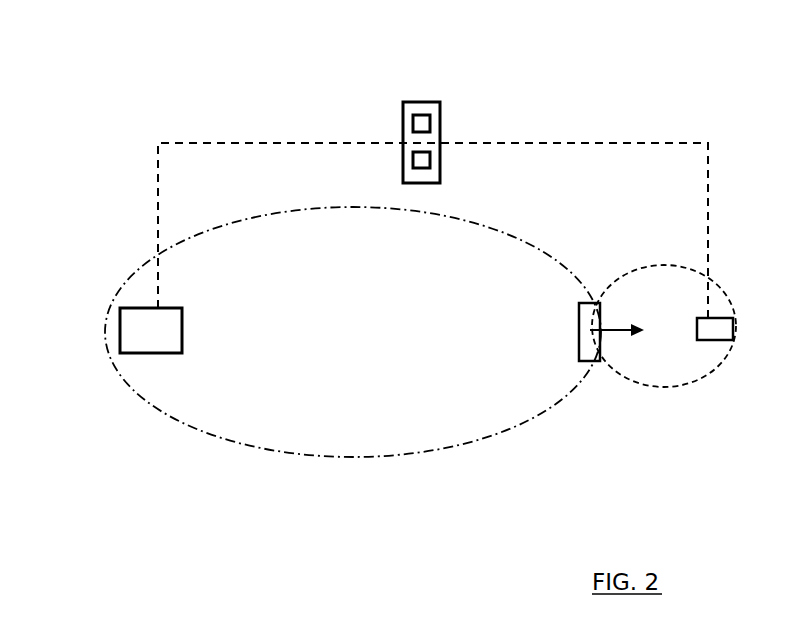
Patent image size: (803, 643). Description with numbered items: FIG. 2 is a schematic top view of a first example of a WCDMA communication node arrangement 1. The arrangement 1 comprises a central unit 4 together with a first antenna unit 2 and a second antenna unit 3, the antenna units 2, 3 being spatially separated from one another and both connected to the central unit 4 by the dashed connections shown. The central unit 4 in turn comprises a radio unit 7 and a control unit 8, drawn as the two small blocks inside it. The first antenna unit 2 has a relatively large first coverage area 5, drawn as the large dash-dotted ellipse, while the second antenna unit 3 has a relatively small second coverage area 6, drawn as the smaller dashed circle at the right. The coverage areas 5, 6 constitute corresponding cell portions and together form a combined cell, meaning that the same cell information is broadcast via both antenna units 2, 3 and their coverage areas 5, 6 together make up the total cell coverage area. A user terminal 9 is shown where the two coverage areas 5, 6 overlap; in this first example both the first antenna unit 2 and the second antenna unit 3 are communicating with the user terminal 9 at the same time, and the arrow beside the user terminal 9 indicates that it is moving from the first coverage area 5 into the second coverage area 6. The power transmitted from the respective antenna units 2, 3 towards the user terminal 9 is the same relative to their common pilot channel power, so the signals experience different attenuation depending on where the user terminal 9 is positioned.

The communication node arrangement 1 is at (152, 98).
The first antenna unit 2 is at (154, 338).
The second antenna unit 3 is at (715, 330).
The central unit 4 is at (412, 138).
The first coverage area 5 is at (348, 354).
The second coverage area 6 is at (692, 365).
The radio unit 7 is at (425, 122).
The control unit 8 is at (425, 160).
The user terminal 9 is at (593, 333).